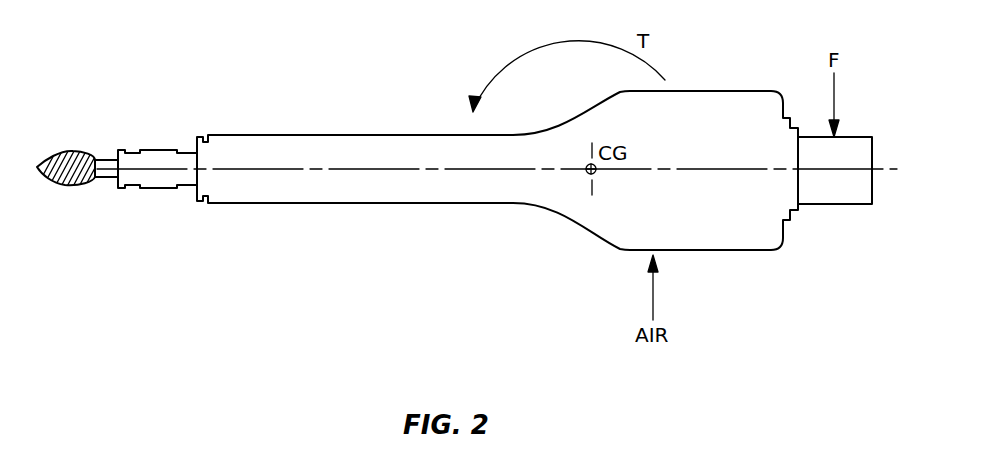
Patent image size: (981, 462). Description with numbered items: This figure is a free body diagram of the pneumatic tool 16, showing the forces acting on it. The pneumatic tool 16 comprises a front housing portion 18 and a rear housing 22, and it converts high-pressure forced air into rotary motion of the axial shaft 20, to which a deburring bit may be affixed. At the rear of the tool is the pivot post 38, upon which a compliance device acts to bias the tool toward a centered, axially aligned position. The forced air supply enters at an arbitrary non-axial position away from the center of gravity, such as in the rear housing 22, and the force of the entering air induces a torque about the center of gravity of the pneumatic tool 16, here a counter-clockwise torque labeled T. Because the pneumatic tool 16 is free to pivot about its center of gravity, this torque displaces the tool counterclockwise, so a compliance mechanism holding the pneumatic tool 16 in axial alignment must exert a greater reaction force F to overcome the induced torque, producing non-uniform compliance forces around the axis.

The pneumatic tool 16 is at (497, 181).
The front housing portion 18 is at (293, 188).
The axial shaft 20 is at (147, 147).
The rear housing 22 is at (723, 232).
The pivot post 38 is at (830, 193).